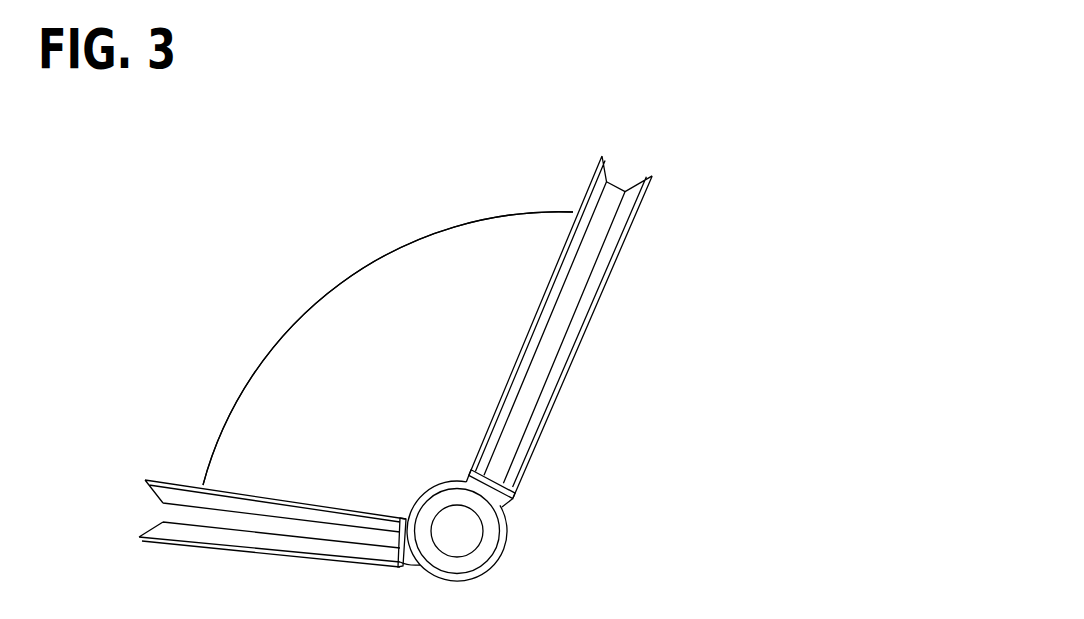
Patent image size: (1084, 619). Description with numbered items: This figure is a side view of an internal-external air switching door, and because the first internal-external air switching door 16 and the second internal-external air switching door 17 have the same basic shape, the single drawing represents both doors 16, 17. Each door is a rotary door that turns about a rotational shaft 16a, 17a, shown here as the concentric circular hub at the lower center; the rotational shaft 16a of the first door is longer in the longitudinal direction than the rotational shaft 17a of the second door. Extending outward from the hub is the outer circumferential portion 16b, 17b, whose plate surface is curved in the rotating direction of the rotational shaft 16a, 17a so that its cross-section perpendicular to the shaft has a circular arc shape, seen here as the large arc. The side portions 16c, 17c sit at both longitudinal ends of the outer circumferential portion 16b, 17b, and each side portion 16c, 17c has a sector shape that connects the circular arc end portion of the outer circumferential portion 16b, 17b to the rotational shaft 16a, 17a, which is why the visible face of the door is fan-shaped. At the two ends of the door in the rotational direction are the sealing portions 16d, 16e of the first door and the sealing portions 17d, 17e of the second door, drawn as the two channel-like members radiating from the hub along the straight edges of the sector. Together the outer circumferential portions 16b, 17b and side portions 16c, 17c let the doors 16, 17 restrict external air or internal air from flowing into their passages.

The first internal-external air switching door 16 is at (437, 362).
The second internal-external air switching door 17 is at (325, 297).
The rotational shaft 16a is at (555, 549).
The rotational shaft 17a is at (500, 562).
The outer circumferential portion 16b is at (351, 348).
The outer circumferential portion 17b is at (270, 352).
The side portion 16c is at (388, 298).
The side portion 17c is at (451, 292).
The sealing portion 16d is at (256, 463).
The sealing portion 17d is at (157, 507).
The sealing portion 16e is at (624, 307).
The sealing portion 17e is at (627, 192).